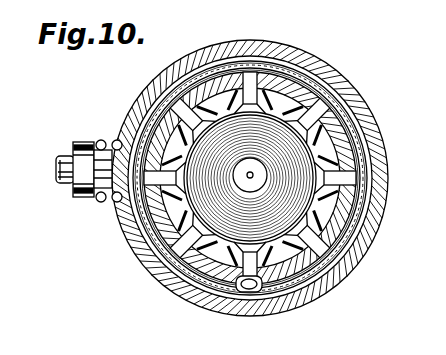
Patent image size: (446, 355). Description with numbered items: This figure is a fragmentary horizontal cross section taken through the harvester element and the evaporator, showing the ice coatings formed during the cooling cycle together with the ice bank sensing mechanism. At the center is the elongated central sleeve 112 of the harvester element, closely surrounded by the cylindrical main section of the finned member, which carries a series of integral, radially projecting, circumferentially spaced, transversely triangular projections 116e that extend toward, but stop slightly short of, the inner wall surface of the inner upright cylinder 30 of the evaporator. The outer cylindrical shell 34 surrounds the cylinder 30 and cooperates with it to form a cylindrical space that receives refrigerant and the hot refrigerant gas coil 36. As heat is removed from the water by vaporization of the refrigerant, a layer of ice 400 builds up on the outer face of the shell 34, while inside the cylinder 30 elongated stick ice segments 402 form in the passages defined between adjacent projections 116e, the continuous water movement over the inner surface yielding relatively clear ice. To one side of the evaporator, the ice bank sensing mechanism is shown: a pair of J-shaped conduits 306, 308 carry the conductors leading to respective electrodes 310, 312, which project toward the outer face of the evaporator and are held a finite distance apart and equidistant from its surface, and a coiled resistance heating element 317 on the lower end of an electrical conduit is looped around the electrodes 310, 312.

The inner upright cylinder 30 is at (285, 72).
The outer cylindrical shell 34 is at (355, 232).
The hot refrigerant gas coil 36 is at (228, 287).
The central sleeve 112 is at (290, 222).
The transversely triangular projections 116e is at (325, 195).
The conduit 306 is at (58, 178).
The conduit 308 is at (58, 162).
The electrode 310 is at (105, 200).
The electrode 312 is at (73, 145).
The coiled resistance heating element 317 is at (102, 138).
The ice layer 400 is at (275, 307).
The stick ice segments 402 is at (338, 136).